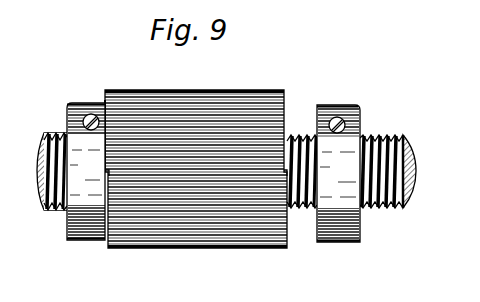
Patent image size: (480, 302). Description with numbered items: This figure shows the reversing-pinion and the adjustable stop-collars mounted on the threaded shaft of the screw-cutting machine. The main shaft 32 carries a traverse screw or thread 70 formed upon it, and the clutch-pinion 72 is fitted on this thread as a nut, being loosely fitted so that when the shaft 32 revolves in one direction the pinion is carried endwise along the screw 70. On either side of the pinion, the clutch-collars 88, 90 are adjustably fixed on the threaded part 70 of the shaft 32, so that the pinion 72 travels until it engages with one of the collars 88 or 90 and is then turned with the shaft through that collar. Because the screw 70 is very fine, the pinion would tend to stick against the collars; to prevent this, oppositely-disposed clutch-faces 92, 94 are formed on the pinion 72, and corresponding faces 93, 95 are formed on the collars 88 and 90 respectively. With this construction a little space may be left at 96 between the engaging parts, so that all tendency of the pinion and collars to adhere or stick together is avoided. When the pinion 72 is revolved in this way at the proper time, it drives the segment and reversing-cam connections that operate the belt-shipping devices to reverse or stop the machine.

The shaft 32 is at (414, 156).
The traverse screw 70 is at (375, 147).
The clutch-pinion 72 is at (185, 233).
The clutch-collar 88 is at (88, 235).
The clutch-collar 90 is at (339, 230).
The clutch-face 92 is at (105, 172).
The clutch-face 93 is at (105, 172).
The clutch-face 94 is at (286, 175).
The clutch-face 95 is at (320, 168).
The space 96 is at (104, 103).